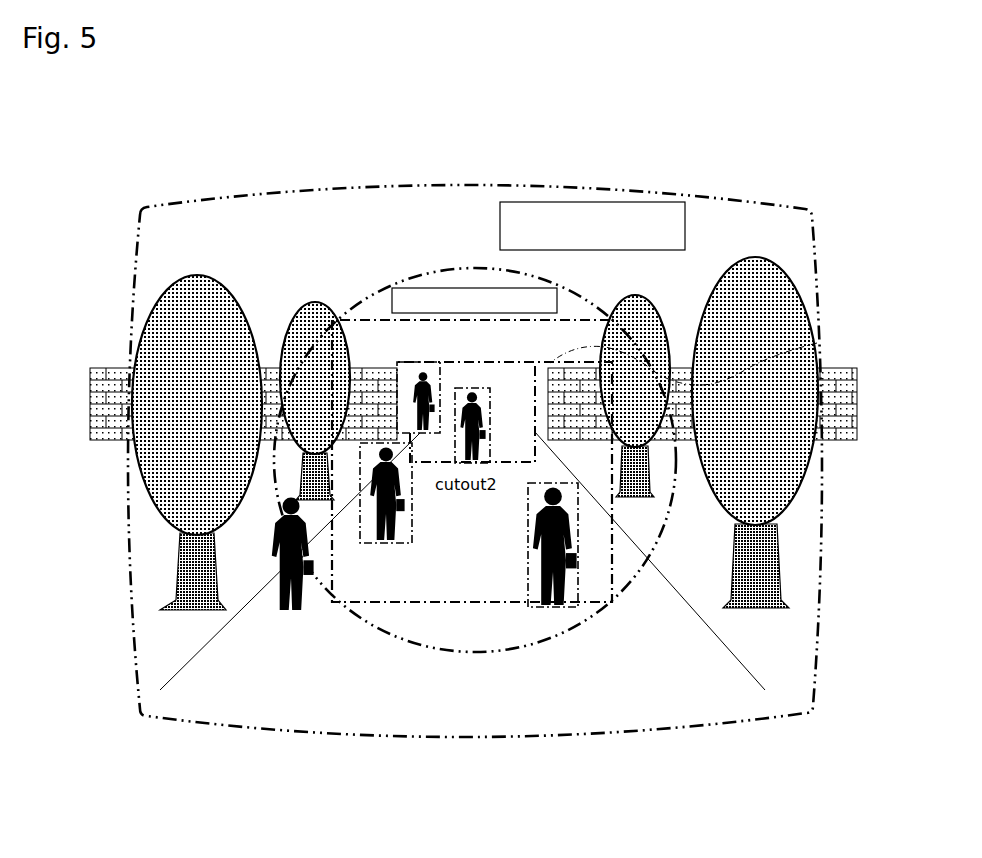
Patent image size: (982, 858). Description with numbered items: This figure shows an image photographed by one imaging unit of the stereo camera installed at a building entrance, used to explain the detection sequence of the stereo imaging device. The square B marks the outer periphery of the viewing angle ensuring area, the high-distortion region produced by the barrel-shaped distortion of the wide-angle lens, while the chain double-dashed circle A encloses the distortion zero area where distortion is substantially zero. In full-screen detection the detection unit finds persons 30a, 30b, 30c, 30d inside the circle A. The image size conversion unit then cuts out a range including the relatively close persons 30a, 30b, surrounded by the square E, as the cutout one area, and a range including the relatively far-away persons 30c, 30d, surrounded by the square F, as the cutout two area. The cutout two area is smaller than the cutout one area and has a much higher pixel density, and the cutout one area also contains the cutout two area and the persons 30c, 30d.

The person 30a is at (572, 555).
The person 30b is at (383, 453).
The person 30c is at (487, 428).
The person 30d is at (418, 385).
The circle A is at (563, 603).
The square B is at (220, 200).
The square E is at (423, 603).
The square F is at (817, 343).